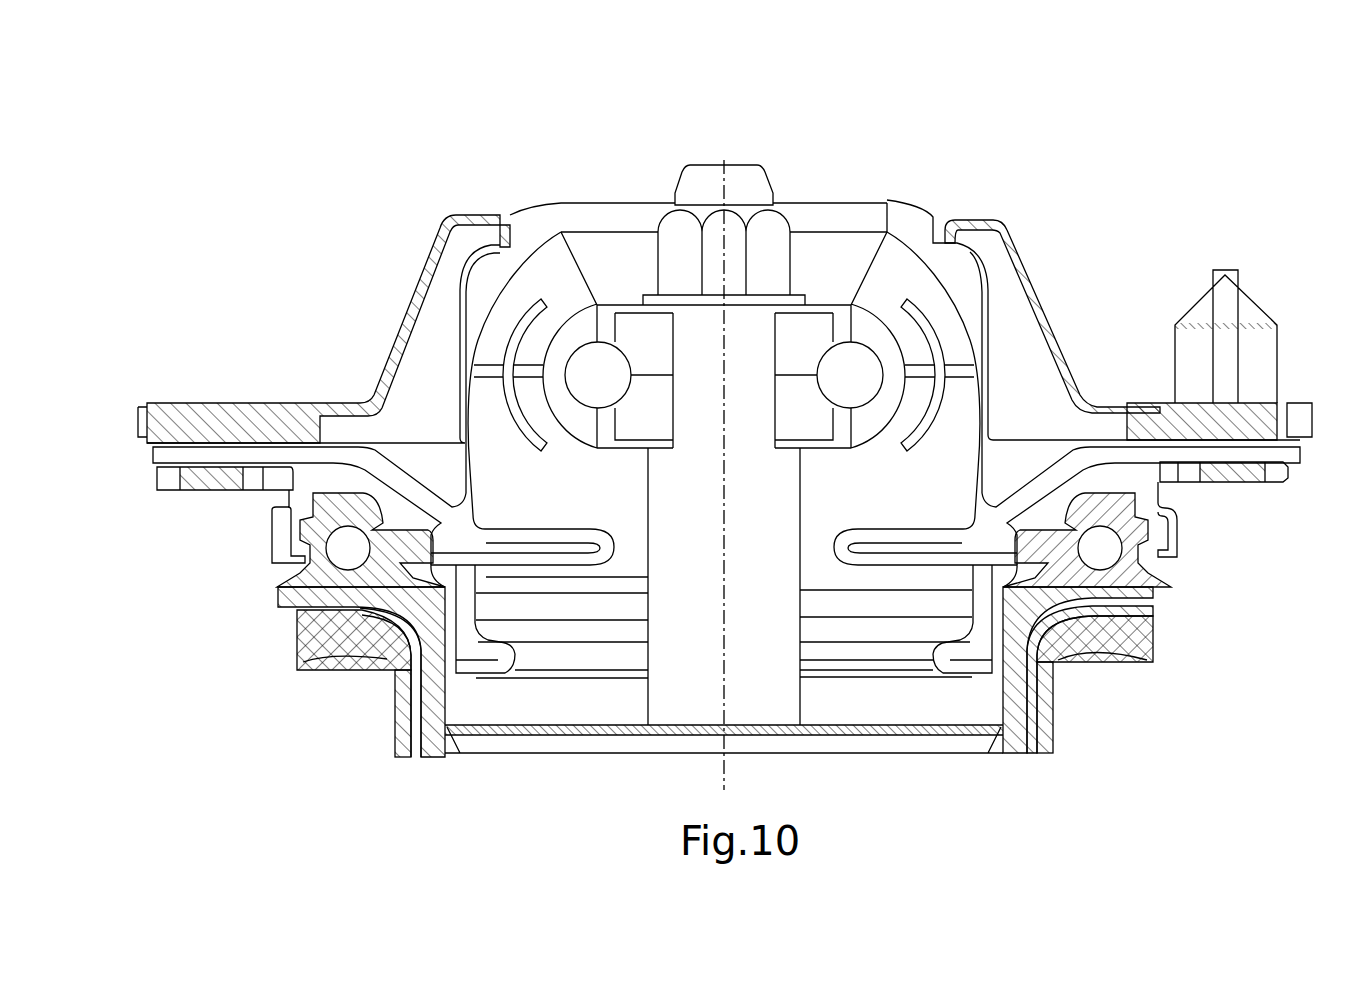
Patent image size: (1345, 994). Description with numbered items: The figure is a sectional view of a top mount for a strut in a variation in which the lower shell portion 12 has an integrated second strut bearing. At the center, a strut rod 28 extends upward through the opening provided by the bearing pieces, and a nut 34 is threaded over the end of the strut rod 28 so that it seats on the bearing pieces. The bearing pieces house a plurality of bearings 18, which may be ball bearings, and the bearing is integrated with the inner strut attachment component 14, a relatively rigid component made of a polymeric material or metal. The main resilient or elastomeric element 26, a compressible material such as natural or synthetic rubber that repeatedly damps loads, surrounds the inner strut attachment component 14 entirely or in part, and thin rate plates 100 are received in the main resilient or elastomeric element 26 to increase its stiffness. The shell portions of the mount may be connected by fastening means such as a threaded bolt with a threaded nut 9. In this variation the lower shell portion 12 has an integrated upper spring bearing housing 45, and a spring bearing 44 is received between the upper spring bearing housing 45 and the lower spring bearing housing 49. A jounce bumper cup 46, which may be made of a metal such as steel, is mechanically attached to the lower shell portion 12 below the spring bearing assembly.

The threaded nut 9 is at (160, 478).
The second shell portion 12 is at (172, 508).
The inner strut attachment component 14 is at (572, 332).
The bearings 18 is at (530, 305).
The main resilient or elastomeric element 26 is at (919, 233).
The strut rod 28 is at (738, 165).
The nut 34 is at (653, 222).
The spring bearing 44 is at (307, 552).
The upper spring bearing housing 45 is at (1160, 527).
The jounce bumper cup 46 is at (390, 670).
The lower spring bearing housing 49 is at (347, 583).
The rate plates 100 is at (503, 338).